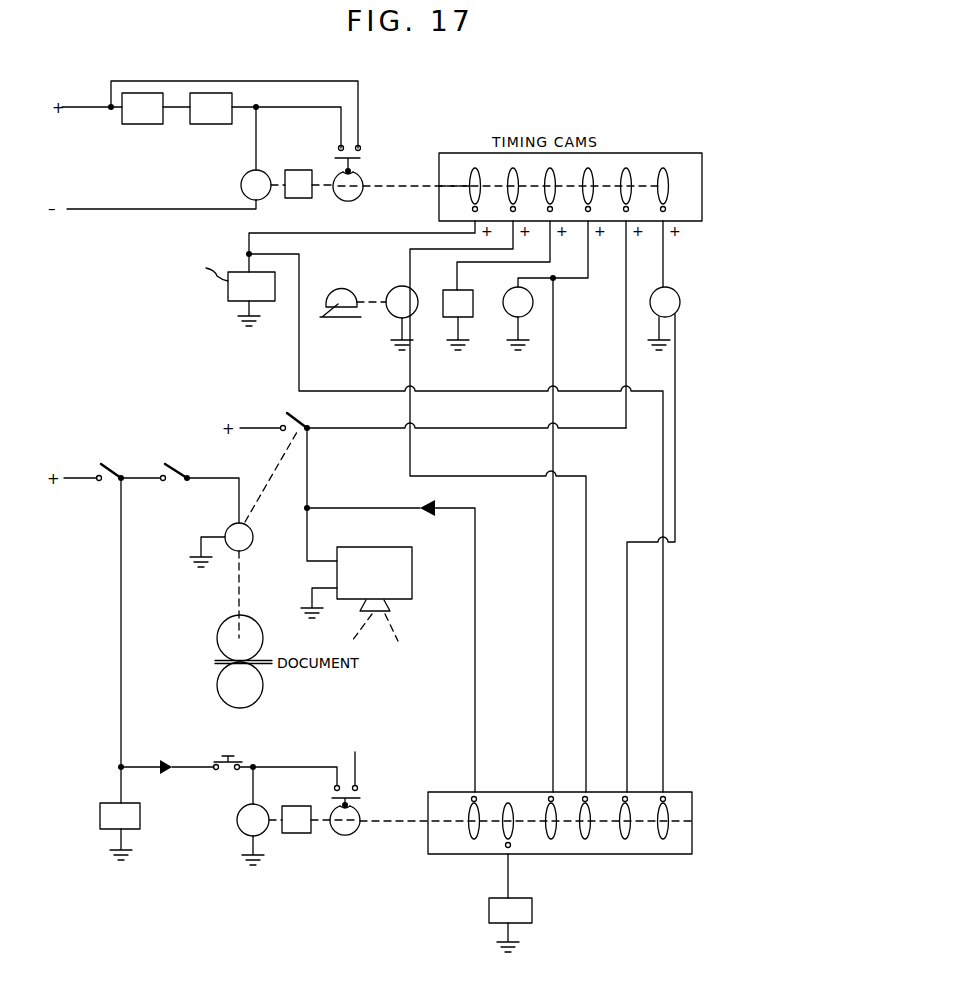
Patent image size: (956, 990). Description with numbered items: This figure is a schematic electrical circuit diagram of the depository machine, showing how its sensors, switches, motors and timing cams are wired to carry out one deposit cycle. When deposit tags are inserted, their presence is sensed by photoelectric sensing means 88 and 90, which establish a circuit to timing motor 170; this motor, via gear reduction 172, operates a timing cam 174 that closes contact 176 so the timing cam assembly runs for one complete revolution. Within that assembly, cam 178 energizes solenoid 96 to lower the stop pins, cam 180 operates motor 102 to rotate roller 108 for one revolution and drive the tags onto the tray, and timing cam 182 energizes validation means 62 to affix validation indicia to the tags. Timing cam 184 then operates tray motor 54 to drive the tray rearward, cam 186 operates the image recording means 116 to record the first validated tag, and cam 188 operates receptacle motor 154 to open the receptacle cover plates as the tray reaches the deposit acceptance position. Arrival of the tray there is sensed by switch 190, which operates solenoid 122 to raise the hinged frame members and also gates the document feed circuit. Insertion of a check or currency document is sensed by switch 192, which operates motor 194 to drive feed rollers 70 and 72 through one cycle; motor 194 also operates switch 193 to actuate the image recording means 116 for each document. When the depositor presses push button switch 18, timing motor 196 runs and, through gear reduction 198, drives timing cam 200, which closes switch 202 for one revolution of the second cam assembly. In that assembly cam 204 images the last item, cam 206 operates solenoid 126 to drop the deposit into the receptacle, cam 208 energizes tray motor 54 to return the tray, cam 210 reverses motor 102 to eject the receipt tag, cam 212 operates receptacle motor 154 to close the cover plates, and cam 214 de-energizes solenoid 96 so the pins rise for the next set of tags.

The photoelectric sensing means 88 is at (128, 126).
The photoelectric sensing means 90 is at (213, 126).
The timing motor 170 is at (241, 186).
The gear reduction 172 is at (289, 170).
The timing cam 174 is at (358, 172).
The contact 176 is at (360, 156).
The cam 178 is at (470, 172).
The cam 180 is at (511, 181).
The timing cam 182 is at (548, 180).
The timing cam 184 is at (586, 180).
The cam 186 is at (624, 180).
The cam 188 is at (662, 180).
The solenoid 96 is at (228, 306).
The roller 108 is at (335, 318).
The motor 102 is at (410, 291).
The validation means 62 is at (447, 317).
The tray motor 54 is at (511, 308).
The receptacle motor 154 is at (680, 302).
The switch 190 is at (112, 467).
The switch 192 is at (182, 467).
The switch 193 is at (305, 420).
The motor 194 is at (252, 546).
The feed roller 70 is at (224, 640).
The feed roller 72 is at (227, 688).
The image recording means 116 is at (373, 548).
The push button switch 18 is at (214, 760).
The solenoid 122 is at (100, 819).
The timing motor 196 is at (240, 830).
The gear reduction 198 is at (296, 833).
The timing cam 200 is at (350, 832).
The switch 202 is at (358, 792).
The cam 204 is at (471, 839).
The cam 206 is at (508, 803).
The cam 208 is at (551, 839).
The cam 210 is at (585, 839).
The cam 212 is at (625, 839).
The cam 214 is at (663, 839).
The solenoid 126 is at (489, 912).